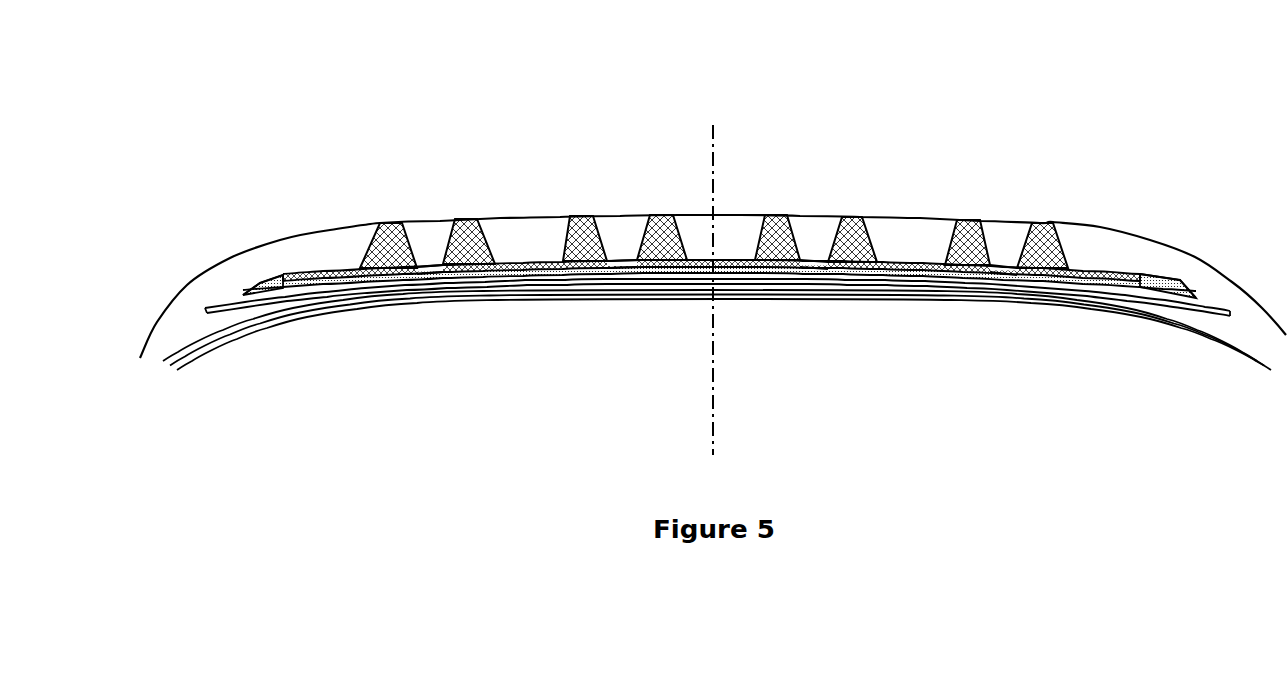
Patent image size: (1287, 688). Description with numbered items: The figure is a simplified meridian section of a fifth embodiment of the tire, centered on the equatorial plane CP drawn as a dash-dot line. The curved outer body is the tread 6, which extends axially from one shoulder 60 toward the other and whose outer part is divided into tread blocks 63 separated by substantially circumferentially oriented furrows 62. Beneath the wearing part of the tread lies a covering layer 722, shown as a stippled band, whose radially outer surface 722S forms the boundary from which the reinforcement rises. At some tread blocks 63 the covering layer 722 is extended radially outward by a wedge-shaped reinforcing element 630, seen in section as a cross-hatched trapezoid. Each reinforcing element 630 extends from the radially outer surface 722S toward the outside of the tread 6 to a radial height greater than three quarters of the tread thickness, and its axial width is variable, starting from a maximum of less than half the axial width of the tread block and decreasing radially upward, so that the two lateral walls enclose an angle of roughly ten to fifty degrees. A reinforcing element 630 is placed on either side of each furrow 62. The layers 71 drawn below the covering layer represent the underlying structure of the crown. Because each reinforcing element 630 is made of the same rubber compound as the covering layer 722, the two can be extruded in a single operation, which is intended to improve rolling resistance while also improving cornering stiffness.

The tread 6 is at (695, 254).
The shoulder 60 is at (200, 254).
The furrow 62 is at (623, 234).
The tread block 63 is at (711, 153).
The wedge-shaped reinforcing element 630 is at (466, 234).
The substrate layers 71 is at (675, 270).
The covering layer 722 is at (495, 267).
The radially outer surface of the covering layer 722S is at (340, 262).
The equatorial plane CP is at (741, 253).